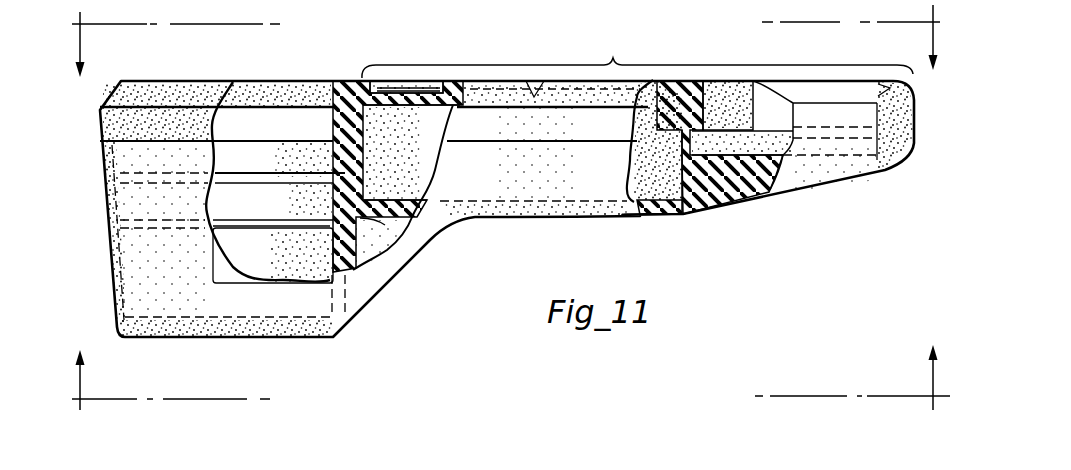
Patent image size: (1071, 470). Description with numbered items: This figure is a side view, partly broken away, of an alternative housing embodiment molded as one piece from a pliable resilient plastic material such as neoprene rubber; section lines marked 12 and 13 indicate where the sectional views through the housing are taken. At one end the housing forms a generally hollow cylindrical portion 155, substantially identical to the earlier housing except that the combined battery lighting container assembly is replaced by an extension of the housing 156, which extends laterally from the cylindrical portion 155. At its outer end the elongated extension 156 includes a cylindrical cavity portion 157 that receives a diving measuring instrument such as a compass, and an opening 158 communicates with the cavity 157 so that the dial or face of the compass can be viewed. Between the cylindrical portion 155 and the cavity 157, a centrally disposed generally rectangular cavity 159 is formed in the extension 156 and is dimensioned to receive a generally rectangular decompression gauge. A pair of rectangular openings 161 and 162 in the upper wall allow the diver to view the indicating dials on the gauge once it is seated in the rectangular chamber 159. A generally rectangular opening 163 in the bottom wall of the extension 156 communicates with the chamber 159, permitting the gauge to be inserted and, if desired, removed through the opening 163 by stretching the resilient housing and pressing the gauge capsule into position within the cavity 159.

The section line 12- 12 is at (506, 38).
The section line 13- 13 is at (506, 387).
The cylindrical portion 155 is at (276, 150).
The extension of the housing 156 is at (637, 57).
The cylindrical cavity portion 157 is at (860, 148).
The opening 158 is at (878, 92).
The rectangular cavity 159 is at (367, 154).
The rectangular opening 161 is at (414, 92).
The rectangular opening 162 is at (540, 79).
The rectangular opening 163 is at (633, 217).